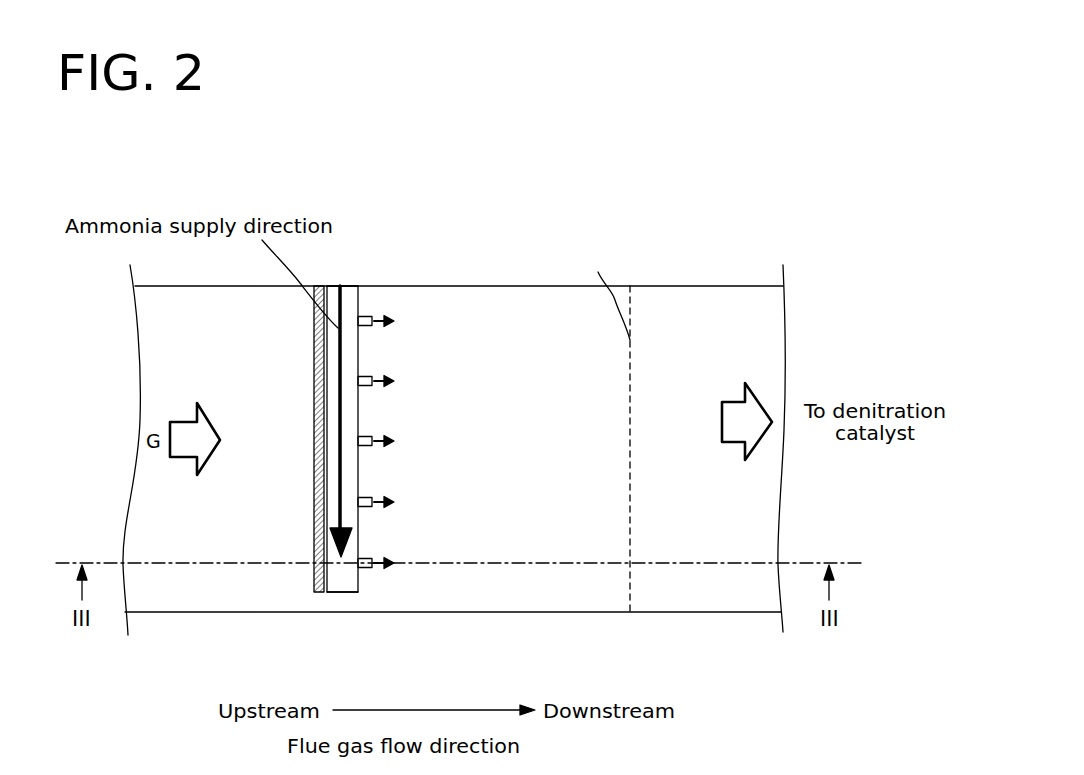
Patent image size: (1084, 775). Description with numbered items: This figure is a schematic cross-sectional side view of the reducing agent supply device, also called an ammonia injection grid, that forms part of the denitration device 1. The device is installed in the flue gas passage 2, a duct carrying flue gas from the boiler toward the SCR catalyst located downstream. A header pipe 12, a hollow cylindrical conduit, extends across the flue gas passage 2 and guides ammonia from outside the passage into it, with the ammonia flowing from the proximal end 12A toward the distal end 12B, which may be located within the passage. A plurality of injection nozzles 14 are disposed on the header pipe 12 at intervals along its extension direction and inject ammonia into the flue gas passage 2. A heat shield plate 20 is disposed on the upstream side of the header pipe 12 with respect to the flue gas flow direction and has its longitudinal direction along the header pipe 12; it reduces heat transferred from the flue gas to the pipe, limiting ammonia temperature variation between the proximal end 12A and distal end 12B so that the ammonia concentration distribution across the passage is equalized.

The denitration device 1 is at (408, 219).
The flue gas passage 2 is at (554, 450).
The header pipe 12 is at (358, 476).
The proximal end 12A is at (358, 290).
The distal end 12B is at (343, 592).
The injection nozzles 14 is at (372, 326).
The heat shield plate 20 is at (316, 405).